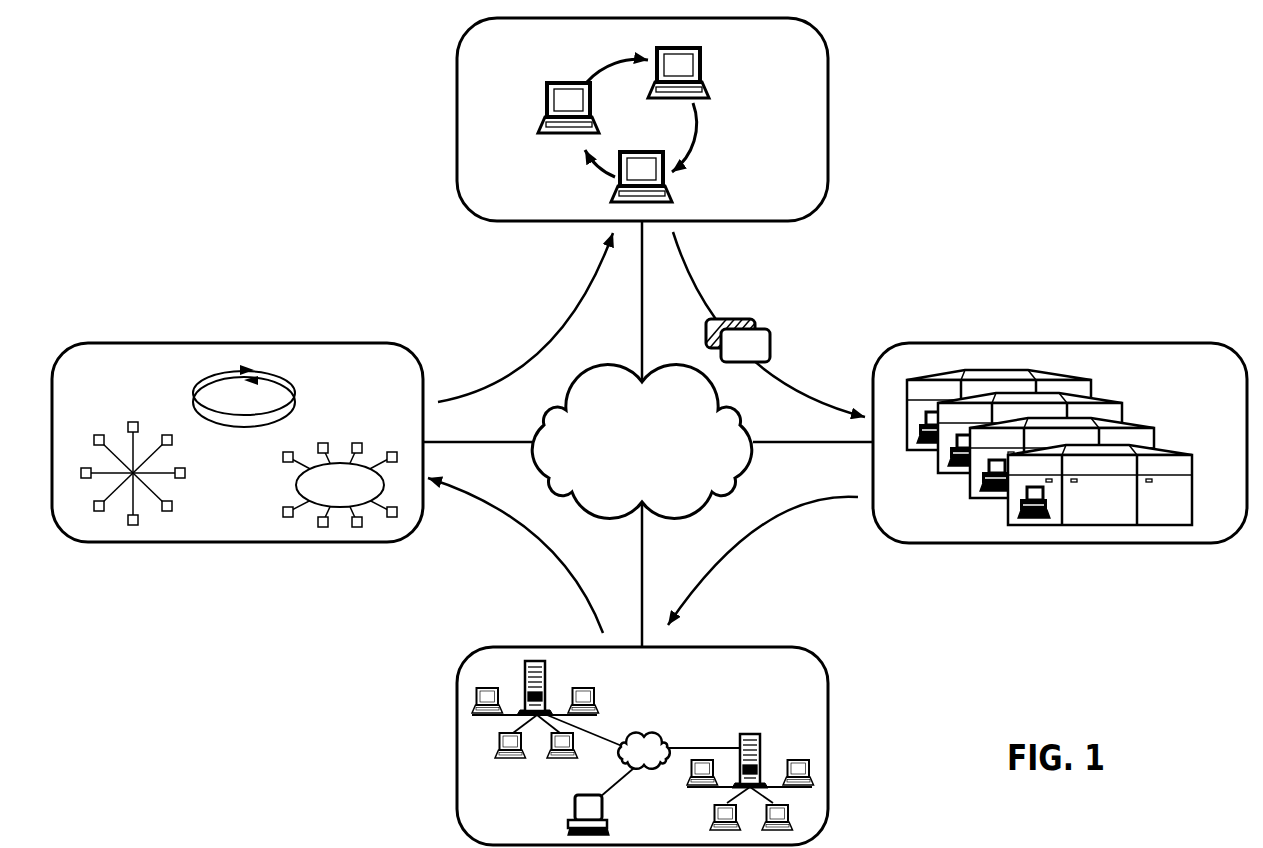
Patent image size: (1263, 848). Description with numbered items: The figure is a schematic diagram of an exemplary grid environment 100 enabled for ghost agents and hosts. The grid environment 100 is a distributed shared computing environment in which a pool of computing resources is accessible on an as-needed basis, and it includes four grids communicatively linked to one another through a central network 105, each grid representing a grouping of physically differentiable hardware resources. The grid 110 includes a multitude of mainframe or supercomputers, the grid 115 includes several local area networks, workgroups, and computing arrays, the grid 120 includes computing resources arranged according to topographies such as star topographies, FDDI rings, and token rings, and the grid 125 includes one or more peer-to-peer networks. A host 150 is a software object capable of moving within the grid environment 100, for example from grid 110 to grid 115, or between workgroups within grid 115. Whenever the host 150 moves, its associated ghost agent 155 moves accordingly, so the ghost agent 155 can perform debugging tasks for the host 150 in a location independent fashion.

The grid environment 100 is at (1114, 91).
The network 105 is at (642, 441).
The grid 110 is at (1060, 443).
The grid 115 is at (642, 746).
The grid 120 is at (237, 442).
The grid 125 is at (642, 119).
The host 150 is at (770, 348).
The ghost agent 155 is at (755, 319).